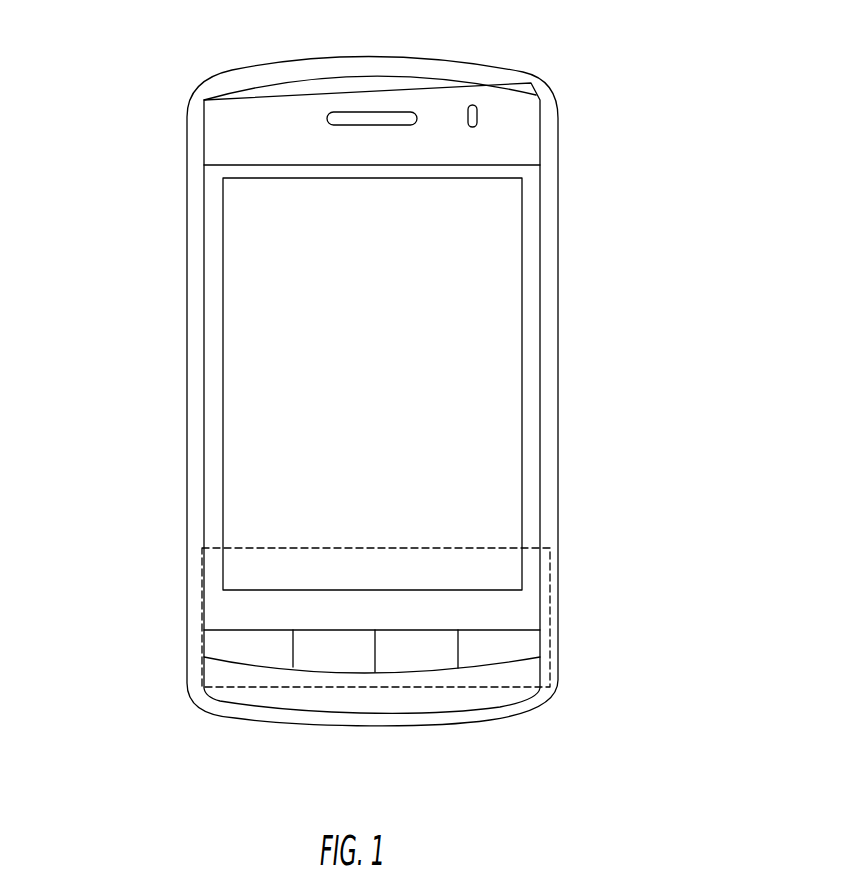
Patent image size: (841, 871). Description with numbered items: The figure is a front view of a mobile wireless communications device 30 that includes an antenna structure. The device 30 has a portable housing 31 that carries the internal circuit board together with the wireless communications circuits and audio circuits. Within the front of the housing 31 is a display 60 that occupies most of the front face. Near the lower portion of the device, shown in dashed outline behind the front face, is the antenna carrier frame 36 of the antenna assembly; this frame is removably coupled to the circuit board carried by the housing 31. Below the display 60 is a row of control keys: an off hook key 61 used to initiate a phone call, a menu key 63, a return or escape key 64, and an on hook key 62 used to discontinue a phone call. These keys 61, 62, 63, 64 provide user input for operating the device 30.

The mobile wireless communications device 30 is at (605, 72).
The portable housing 31 is at (188, 117).
The display 60 is at (240, 320).
The antenna carrier frame 36 is at (550, 580).
The off hook key 61 is at (240, 666).
The on hook key 62 is at (520, 660).
The menu key 63 is at (337, 672).
The return or escape key 64 is at (427, 672).